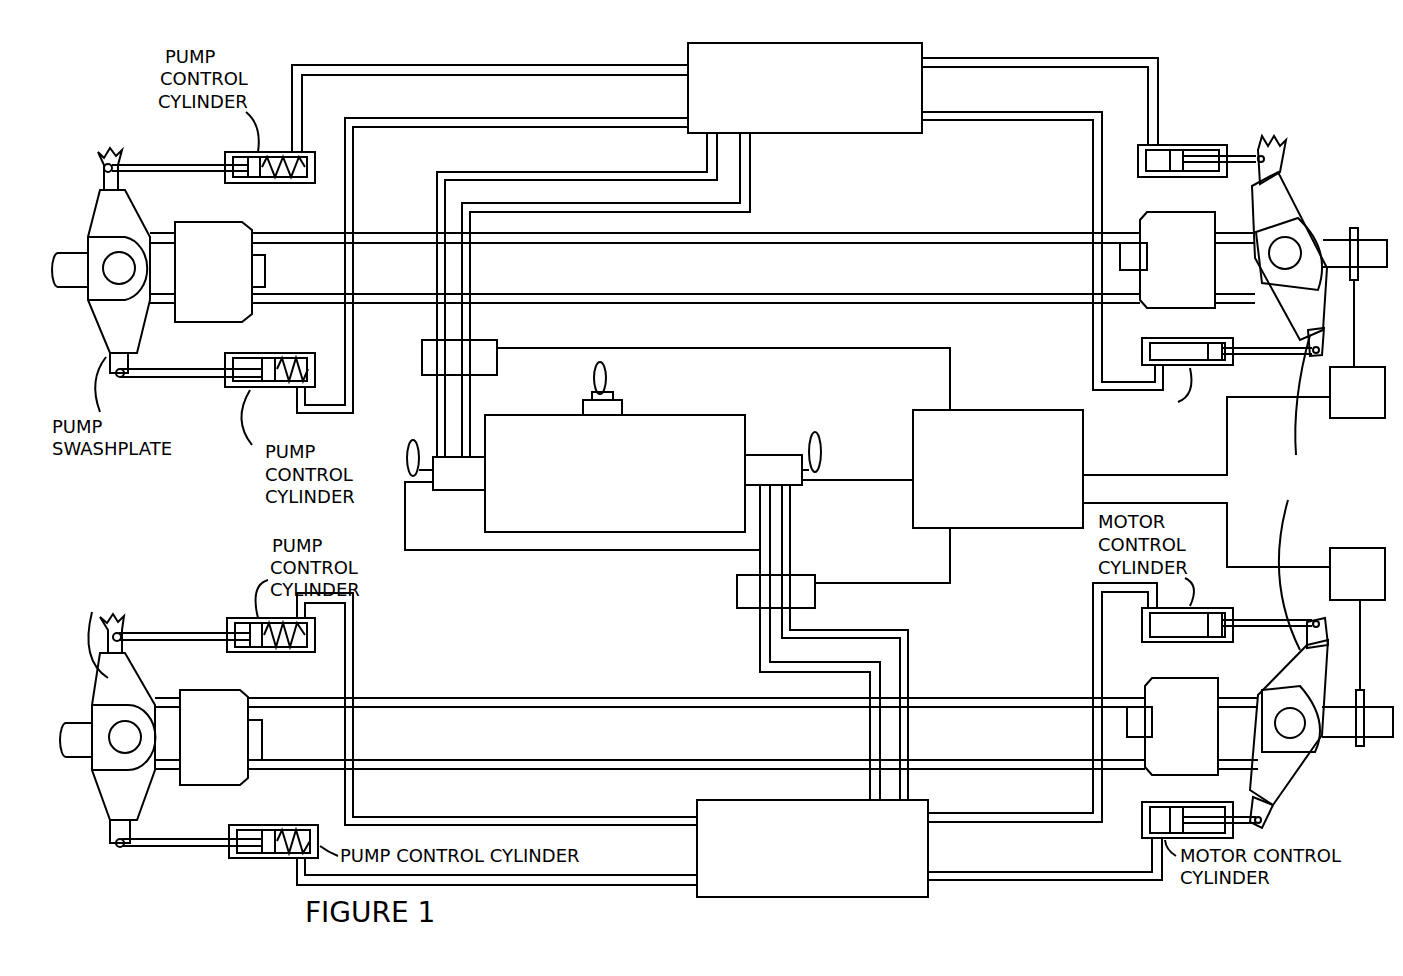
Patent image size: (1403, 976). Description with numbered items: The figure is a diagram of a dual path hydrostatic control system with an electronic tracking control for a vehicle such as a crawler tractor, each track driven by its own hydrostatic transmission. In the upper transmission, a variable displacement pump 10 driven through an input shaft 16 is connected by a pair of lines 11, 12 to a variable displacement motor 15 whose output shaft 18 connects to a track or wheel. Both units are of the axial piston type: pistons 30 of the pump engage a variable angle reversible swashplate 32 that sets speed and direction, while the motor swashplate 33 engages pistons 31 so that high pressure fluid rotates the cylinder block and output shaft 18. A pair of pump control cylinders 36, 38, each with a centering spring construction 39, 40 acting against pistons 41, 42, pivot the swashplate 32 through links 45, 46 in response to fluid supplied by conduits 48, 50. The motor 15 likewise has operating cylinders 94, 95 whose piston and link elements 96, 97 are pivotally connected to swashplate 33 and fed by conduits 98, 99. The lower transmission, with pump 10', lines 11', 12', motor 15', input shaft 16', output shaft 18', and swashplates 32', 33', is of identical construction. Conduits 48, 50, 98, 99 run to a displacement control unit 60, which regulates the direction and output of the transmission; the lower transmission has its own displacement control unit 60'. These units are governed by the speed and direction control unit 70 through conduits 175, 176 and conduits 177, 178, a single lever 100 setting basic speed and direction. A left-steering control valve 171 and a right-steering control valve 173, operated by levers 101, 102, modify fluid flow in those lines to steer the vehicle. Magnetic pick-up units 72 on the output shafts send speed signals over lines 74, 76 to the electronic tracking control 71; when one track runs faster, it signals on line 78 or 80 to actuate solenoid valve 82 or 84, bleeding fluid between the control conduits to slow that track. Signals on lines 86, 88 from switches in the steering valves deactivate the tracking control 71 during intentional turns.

The variable displacement pump 10 is at (234, 272).
The variable displacement pump 10' is at (208, 723).
The line 11 is at (696, 224).
The line 11' is at (696, 690).
The line 12 is at (696, 287).
The line 12' is at (696, 753).
The variable displacement motor 15 is at (1167, 245).
The variable displacement motor 15' is at (1192, 712).
The input shaft 16 is at (66, 253).
The input shaft 16' is at (68, 721).
The output shaft 18 is at (1350, 285).
The output shaft 18' is at (1355, 729).
The pistons 30 is at (158, 232).
The pistons 31 is at (1232, 230).
The swashplate 32 is at (122, 262).
The swashplate 32' is at (117, 707).
The swashplate 33 is at (1300, 317).
The swashplate 33' is at (1284, 664).
The pump control cylinder 36 is at (278, 166).
The pump control cylinder 38 is at (280, 348).
The spring construction 39 is at (280, 182).
The spring construction 40 is at (290, 355).
The piston 41 is at (246, 180).
The piston 42 is at (258, 356).
The link 45 is at (186, 164).
The link 46 is at (150, 377).
The conduit 48 is at (302, 100).
The conduit 50 is at (300, 402).
The displacement control unit 60 is at (824, 78).
The displacement control unit 60' is at (792, 839).
The speed and direction control unit 70 is at (697, 415).
The electronic tracking control 71 is at (975, 410).
The magnetic pick-up unit 72 is at (1358, 366).
The line 74 is at (1228, 432).
The line 76 is at (1228, 540).
The line 78 is at (758, 348).
The line 80 is at (952, 558).
The solenoid valve 82 is at (421, 344).
The solenoid valve 84 is at (814, 580).
The line 86 is at (446, 552).
The line 88 is at (854, 480).
The operating cylinder 94 is at (1139, 160).
The operating cylinder 95 is at (1144, 344).
The piston and link element 96 is at (1246, 157).
The piston and link element 97 is at (1262, 360).
The conduit 98 is at (1147, 100).
The conduit 99 is at (1091, 338).
The lever 100 is at (606, 374).
The lever 101 is at (412, 440).
The lever 102 is at (815, 432).
The left-steering control valve 171 is at (446, 492).
The right-steering control valve 173 is at (796, 487).
The conduit 175 is at (704, 154).
The conduit 176 is at (752, 172).
The conduit 177 is at (868, 786).
The conduit 178 is at (910, 786).